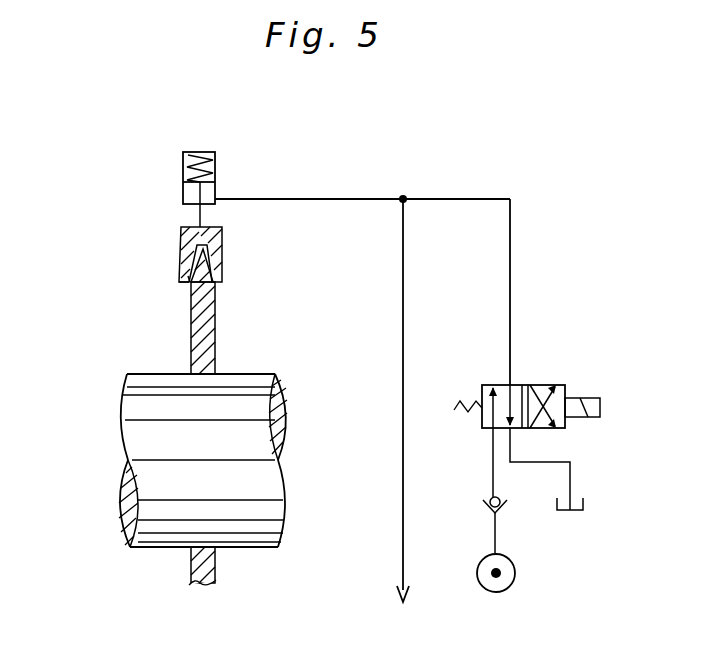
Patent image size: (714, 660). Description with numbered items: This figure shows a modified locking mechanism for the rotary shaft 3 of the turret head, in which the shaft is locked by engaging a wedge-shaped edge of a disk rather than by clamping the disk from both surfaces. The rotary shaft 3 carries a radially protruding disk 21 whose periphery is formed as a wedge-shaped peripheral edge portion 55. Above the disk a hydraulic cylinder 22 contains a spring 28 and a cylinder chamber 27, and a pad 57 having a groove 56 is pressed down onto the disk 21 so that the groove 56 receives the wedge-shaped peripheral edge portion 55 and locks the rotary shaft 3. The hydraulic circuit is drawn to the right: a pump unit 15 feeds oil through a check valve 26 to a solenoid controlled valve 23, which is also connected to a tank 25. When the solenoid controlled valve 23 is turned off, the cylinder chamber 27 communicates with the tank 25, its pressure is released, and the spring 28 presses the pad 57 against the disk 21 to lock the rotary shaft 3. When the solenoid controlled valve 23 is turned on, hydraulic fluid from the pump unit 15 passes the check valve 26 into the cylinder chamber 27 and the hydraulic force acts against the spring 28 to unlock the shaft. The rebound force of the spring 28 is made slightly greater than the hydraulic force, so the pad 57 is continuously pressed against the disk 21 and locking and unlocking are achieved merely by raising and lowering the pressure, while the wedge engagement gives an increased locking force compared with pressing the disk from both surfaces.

The rotary shaft 3 is at (130, 427).
The pump unit 15 is at (515, 575).
The disk 21 is at (200, 325).
The hydraulic cylinder 22 is at (197, 178).
The solenoid controlled valve 23 is at (545, 385).
The tank 25 is at (588, 505).
The check valve 26 is at (502, 510).
The cylinder chamber 27 is at (188, 192).
The spring 28 is at (213, 168).
The wedge-shaped peripheral edge portion 55 is at (203, 260).
The groove 56 is at (183, 276).
The pad 57 is at (182, 233).